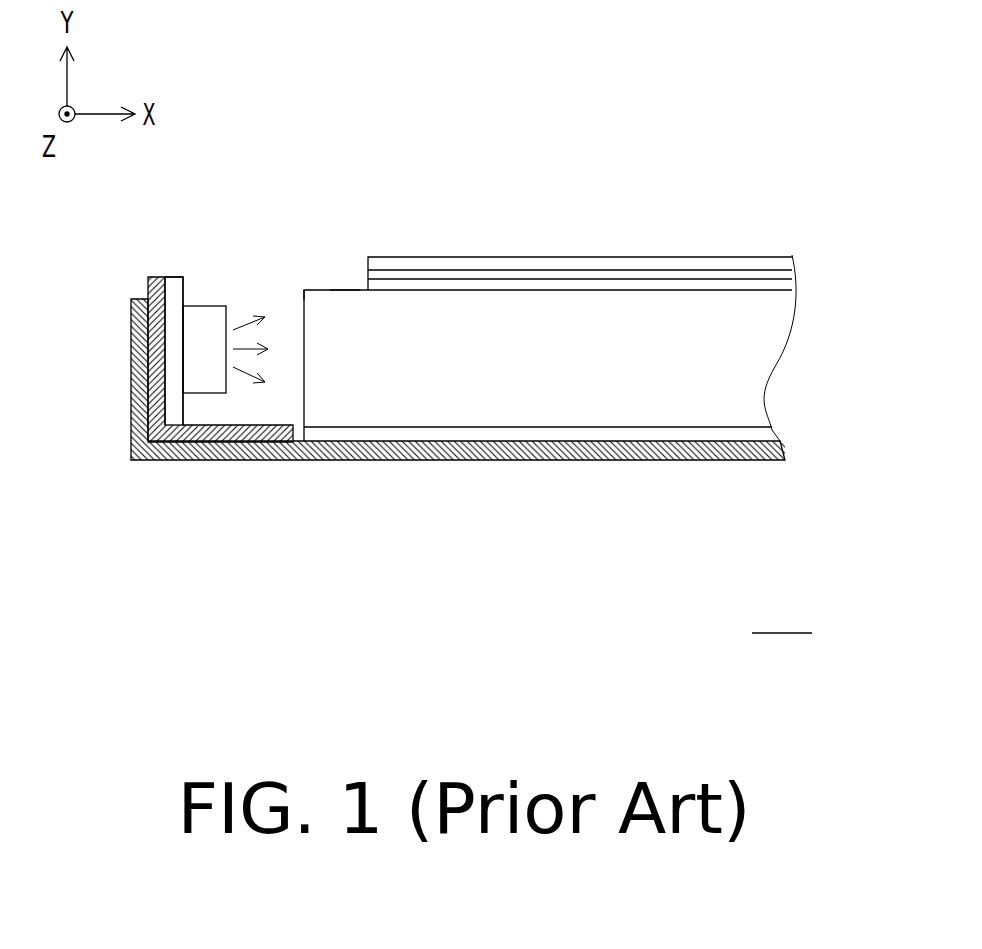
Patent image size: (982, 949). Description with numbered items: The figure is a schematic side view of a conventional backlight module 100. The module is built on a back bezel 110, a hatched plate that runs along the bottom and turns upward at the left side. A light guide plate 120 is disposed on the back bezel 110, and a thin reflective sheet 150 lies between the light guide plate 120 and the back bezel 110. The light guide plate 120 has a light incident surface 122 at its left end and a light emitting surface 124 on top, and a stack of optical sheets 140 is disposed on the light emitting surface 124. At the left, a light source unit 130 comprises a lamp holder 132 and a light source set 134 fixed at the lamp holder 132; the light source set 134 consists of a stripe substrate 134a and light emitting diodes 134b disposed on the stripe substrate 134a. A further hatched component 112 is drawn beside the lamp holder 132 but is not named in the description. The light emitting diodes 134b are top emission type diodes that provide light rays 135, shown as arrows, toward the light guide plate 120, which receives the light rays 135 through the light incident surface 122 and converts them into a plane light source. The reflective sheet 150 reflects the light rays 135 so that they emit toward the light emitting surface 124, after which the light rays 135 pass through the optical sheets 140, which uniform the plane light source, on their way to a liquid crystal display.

The backlight module 100 is at (782, 612).
The back bezel 110 is at (550, 447).
The reflective sheet 112 is at (156, 307).
The light guide plate 120 is at (577, 297).
The light incident surface 122 is at (303, 283).
The light emitting surface 124 is at (347, 279).
The light source unit 130 is at (172, 451).
The lamp holder 132 is at (155, 412).
The light source set 134 is at (225, 428).
The stripe substrate 134a is at (173, 418).
The light emitting diodes 134b is at (207, 385).
The light rays 135 is at (243, 320).
The optical sheets 140 is at (786, 262).
The reflective sheet 150 is at (772, 433).